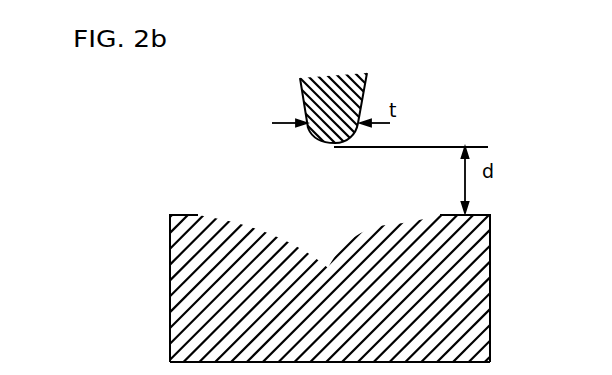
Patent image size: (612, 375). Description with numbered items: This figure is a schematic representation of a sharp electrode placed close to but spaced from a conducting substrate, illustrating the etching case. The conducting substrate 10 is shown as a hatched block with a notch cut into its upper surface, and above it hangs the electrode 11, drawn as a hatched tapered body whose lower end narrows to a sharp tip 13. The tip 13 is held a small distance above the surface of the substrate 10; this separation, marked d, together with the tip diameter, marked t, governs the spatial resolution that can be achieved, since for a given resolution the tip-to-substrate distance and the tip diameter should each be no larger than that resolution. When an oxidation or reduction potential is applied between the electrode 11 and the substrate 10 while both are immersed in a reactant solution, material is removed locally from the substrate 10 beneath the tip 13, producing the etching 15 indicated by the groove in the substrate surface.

The conducting substrate 10 is at (170, 284).
The electrode 11 is at (332, 102).
The sharp tip 13 is at (309, 134).
The etching 15 is at (329, 268).